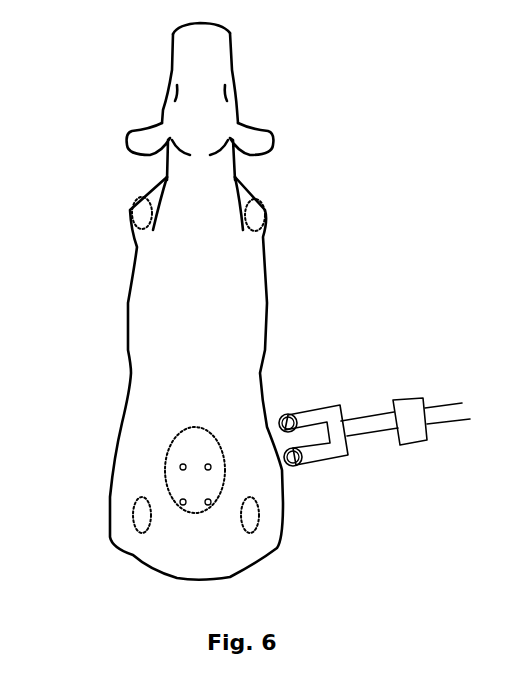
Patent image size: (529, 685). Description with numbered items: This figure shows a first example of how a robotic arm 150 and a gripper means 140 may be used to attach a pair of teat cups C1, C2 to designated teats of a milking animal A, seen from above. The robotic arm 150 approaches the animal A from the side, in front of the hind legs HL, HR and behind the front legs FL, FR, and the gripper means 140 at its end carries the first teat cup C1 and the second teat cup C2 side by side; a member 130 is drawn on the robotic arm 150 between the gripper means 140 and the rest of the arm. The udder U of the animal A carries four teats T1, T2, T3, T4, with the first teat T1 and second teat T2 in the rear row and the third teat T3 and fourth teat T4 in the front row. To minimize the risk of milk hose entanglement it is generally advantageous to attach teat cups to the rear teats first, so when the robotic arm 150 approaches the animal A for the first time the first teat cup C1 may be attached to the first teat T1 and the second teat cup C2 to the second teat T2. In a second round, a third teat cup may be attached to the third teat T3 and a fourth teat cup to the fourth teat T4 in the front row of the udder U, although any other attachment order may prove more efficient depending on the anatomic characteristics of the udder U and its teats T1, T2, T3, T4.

The milking animal A is at (108, 76).
The front leg FL is at (130, 212).
The front leg FR is at (268, 213).
The udder U is at (173, 440).
The first teat T1 is at (209, 505).
The second teat T2 is at (182, 505).
The third teat T3 is at (210, 469).
The fourth teat T4 is at (180, 467).
The hind leg HL is at (132, 518).
The hind leg HR is at (258, 530).
The first teat cup C1 is at (296, 466).
The second teat cup C2 is at (284, 416).
The robot arm joint 130 is at (407, 399).
The gripper means 140 is at (348, 457).
The robotic arm 150 is at (451, 426).